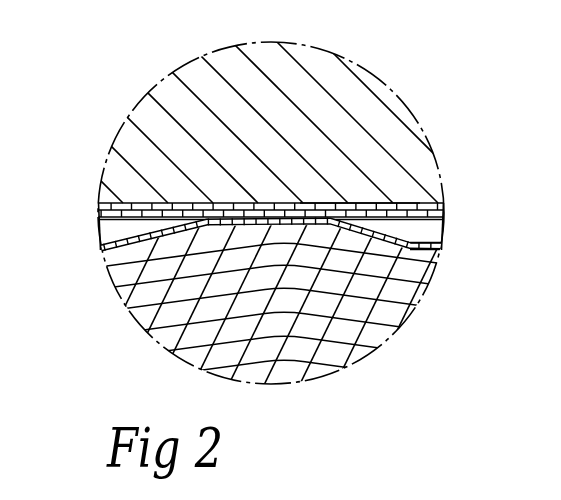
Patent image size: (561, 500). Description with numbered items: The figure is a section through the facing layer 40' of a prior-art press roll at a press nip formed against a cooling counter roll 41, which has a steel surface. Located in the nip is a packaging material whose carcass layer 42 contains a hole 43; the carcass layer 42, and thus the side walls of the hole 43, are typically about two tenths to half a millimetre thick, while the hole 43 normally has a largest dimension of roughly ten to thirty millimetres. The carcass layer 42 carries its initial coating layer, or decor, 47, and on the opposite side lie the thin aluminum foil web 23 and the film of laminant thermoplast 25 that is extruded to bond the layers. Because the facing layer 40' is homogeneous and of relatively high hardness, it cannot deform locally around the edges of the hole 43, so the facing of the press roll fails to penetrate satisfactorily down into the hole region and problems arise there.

The cooling counter roll 41 is at (174, 96).
The aluminum foil web 23 is at (446, 204).
The laminant thermoplast film 25 is at (447, 214).
The hole 43 is at (356, 203).
The carcass layer 42 is at (108, 230).
The initial coating layer 47 is at (443, 250).
The facing layer 40' is at (266, 307).